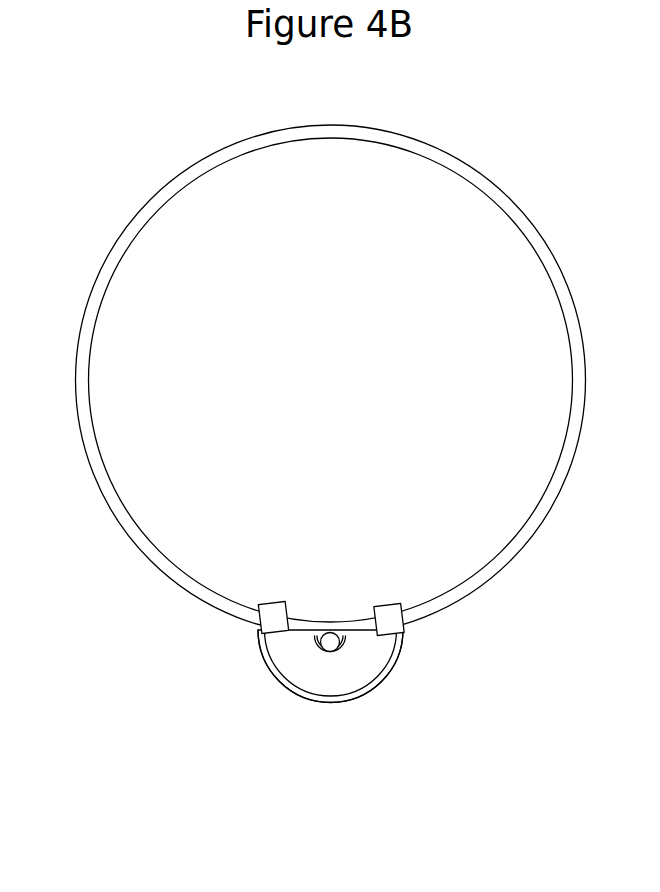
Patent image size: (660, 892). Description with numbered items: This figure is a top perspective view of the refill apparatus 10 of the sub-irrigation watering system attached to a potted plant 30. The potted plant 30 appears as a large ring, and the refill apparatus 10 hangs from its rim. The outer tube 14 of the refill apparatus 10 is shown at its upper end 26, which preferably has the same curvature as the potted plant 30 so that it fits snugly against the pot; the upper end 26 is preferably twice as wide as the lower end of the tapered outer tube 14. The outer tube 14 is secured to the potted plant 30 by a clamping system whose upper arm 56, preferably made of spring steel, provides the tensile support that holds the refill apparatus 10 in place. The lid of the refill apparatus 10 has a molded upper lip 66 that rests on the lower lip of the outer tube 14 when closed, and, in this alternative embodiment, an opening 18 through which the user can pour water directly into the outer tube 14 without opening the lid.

The refill apparatus 10 is at (347, 722).
The outer tube 14 is at (386, 679).
The opening 18 is at (326, 661).
The upper end 26 is at (263, 657).
The potted plant 30 is at (548, 250).
The upper arm 56 is at (393, 622).
The upper lip 66 is at (402, 653).